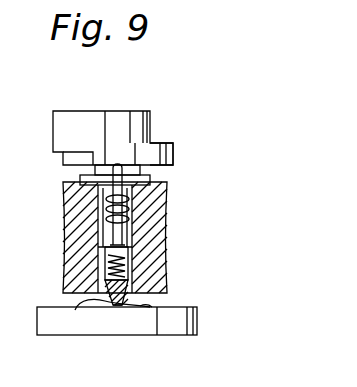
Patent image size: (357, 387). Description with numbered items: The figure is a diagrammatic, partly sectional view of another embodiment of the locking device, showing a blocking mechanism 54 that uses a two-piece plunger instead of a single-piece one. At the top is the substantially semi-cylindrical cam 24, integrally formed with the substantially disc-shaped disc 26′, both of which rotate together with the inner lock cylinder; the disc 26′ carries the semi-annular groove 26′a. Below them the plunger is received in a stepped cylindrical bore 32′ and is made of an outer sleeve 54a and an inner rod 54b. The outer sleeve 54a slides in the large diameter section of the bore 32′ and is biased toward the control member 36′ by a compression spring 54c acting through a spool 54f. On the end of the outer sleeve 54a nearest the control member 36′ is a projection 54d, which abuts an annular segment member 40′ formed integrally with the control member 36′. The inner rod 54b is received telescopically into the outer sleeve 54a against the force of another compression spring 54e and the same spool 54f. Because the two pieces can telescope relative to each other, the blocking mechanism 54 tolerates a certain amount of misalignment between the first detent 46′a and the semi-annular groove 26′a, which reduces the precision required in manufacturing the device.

The cam 24 is at (83, 117).
The semi-annular groove 26′a is at (65, 158).
The disc 26′ is at (178, 153).
The inner rod 54b is at (152, 183).
The compression spring 54c is at (131, 214).
The blocking mechanism 54 is at (128, 222).
The spool 54f is at (100, 257).
The compression spring 54e is at (128, 256).
The stepped cylindrical bore 32′ is at (70, 283).
The outer sleeve 54a is at (128, 283).
The projection 54d is at (126, 303).
The control member 36′ is at (199, 322).
The annular segment member 40′ is at (75, 310).
The first detent 46′a is at (147, 310).